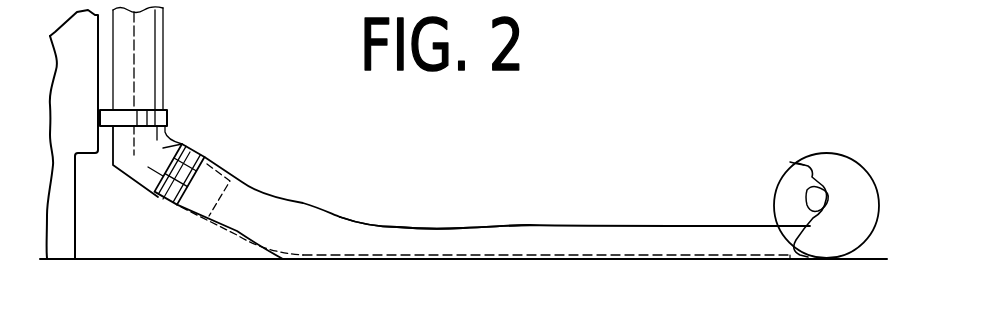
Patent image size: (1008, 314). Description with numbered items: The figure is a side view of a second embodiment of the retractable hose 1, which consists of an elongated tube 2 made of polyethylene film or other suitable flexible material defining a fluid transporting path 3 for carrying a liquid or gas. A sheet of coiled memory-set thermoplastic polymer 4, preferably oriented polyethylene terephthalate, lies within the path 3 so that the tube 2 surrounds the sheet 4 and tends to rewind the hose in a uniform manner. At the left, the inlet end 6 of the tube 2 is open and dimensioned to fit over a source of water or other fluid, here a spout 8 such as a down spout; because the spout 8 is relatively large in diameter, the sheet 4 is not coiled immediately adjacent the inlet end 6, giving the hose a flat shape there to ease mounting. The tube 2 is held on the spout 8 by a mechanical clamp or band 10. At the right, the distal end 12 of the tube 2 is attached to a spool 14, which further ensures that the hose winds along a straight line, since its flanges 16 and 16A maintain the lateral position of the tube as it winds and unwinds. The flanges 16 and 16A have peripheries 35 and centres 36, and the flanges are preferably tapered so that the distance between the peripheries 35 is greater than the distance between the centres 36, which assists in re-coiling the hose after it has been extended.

The retractable hose 1 is at (392, 204).
The elongated tube 2 is at (290, 217).
The fluid transporting path 3 is at (558, 233).
The coiled memory-set thermoplastic polymer sheet 4 is at (628, 258).
The inlet end 6 is at (242, 182).
The spout 8 is at (163, 147).
The mechanical clamp or band 10 is at (173, 203).
The distal end 12 is at (782, 240).
The spool 14 is at (853, 237).
The flange 16 is at (795, 168).
The flange 16A is at (853, 178).
The periphery 35 is at (787, 188).
The centre 36 is at (810, 210).